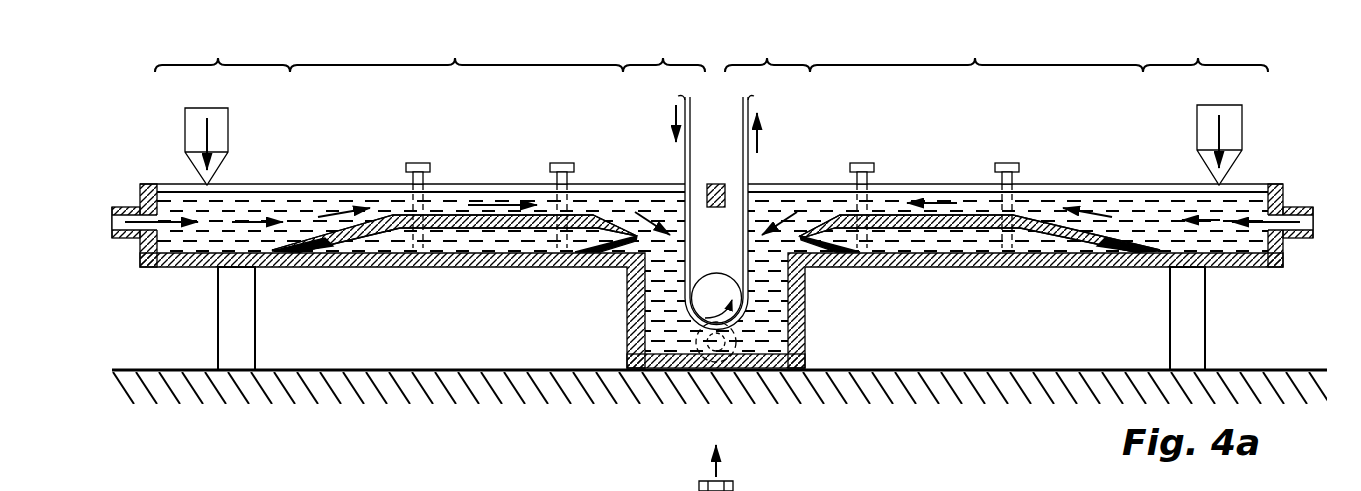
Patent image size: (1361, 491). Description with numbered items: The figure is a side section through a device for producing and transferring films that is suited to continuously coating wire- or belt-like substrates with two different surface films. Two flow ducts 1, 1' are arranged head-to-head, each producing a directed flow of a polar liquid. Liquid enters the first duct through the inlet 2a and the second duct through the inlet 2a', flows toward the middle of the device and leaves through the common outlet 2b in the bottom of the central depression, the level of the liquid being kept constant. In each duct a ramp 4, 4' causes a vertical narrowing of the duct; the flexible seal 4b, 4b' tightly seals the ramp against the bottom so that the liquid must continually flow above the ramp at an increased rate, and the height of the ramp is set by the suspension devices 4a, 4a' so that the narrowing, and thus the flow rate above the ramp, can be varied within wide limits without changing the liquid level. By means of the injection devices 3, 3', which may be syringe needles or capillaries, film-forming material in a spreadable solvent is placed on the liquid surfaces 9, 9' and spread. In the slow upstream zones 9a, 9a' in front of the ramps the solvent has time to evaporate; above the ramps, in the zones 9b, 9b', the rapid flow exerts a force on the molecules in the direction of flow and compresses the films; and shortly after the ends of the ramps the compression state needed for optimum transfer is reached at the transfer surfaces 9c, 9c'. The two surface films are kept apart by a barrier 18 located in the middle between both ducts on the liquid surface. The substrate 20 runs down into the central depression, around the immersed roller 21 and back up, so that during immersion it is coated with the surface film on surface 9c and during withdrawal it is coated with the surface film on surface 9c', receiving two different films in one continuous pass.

The flow duct 1 is at (472, 277).
The flow duct 1' is at (1035, 277).
The inlet 2a is at (147, 188).
The inlet 2a' is at (1288, 187).
The outlet 2b is at (708, 355).
The injection device 3 is at (181, 141).
The injection device 3' is at (1243, 140).
The ramp 4 is at (454, 175).
The ramp 4' is at (980, 174).
The suspension device 4a is at (480, 173).
The suspension device 4a' is at (939, 172).
The flexible seal 4b is at (454, 281).
The flexible seal 4b' is at (980, 281).
The liquid surface 9 is at (711, 226).
The liquid surface 9' is at (1089, 140).
The zone in front of the ramp 9a is at (222, 44).
The zone in front of the ramp 9a' is at (1205, 44).
The compression zone 9b is at (456, 44).
The compression zone 9b' is at (976, 44).
The film transfer zone 9c is at (664, 44).
The film transfer zone 9c' is at (767, 44).
The barrier 18 is at (716, 184).
The substrate 20 is at (685, 165).
The immersed roller 21 is at (700, 297).